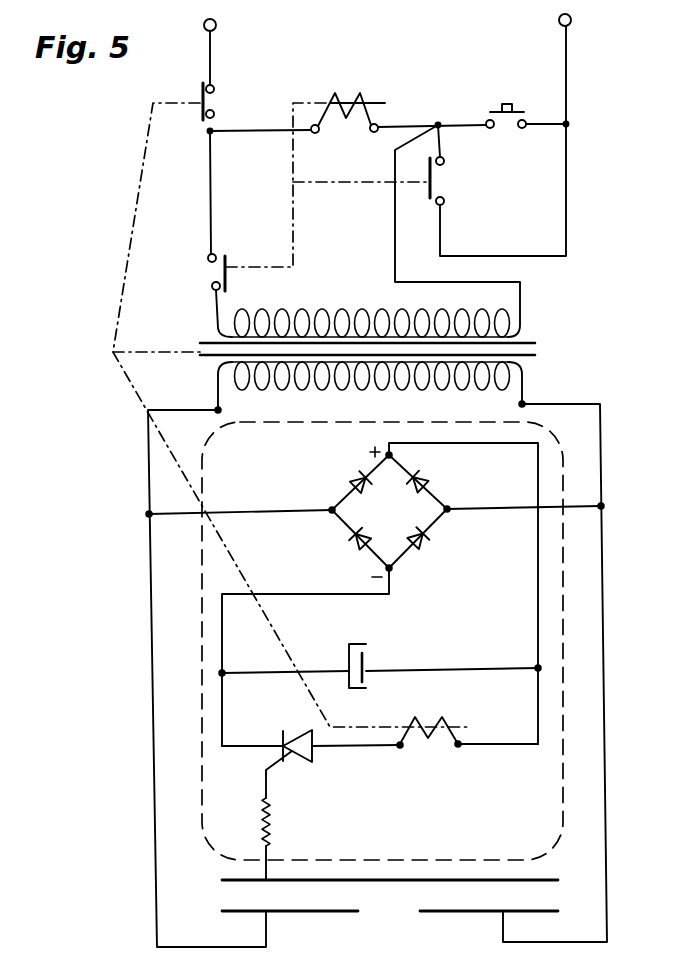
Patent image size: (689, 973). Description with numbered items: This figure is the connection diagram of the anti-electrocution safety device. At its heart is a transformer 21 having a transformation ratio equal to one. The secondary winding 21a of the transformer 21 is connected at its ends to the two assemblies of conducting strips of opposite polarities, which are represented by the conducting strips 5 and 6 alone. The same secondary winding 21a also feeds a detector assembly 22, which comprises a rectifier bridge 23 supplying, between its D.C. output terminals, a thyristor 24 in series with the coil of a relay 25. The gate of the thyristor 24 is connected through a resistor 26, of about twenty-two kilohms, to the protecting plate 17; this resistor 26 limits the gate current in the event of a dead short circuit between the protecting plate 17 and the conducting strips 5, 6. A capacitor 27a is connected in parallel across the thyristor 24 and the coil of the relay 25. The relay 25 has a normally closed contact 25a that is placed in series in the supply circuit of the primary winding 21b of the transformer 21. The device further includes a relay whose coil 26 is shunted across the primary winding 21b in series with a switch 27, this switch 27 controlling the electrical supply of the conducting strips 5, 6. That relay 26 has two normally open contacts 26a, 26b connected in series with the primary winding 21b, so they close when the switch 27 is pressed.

The conducting strip 5 is at (318, 914).
The conducting strip 6 is at (484, 913).
The protecting plate 17 is at (461, 879).
The transformer 21 is at (527, 339).
The secondary winding 21a is at (403, 383).
The primary winding 21b is at (360, 306).
The detector assembly 22 is at (200, 656).
The rectifier bridge 23 is at (335, 484).
The thyristor 24 is at (309, 761).
The relay 25 is at (446, 745).
The normally closed contact 25a is at (203, 93).
The resistor / relay coil 26 is at (364, 99).
The normally open contact 26a is at (229, 262).
The normally open contact 26b is at (433, 197).
The switch 27 is at (500, 107).
The capacitor 27a is at (367, 659).